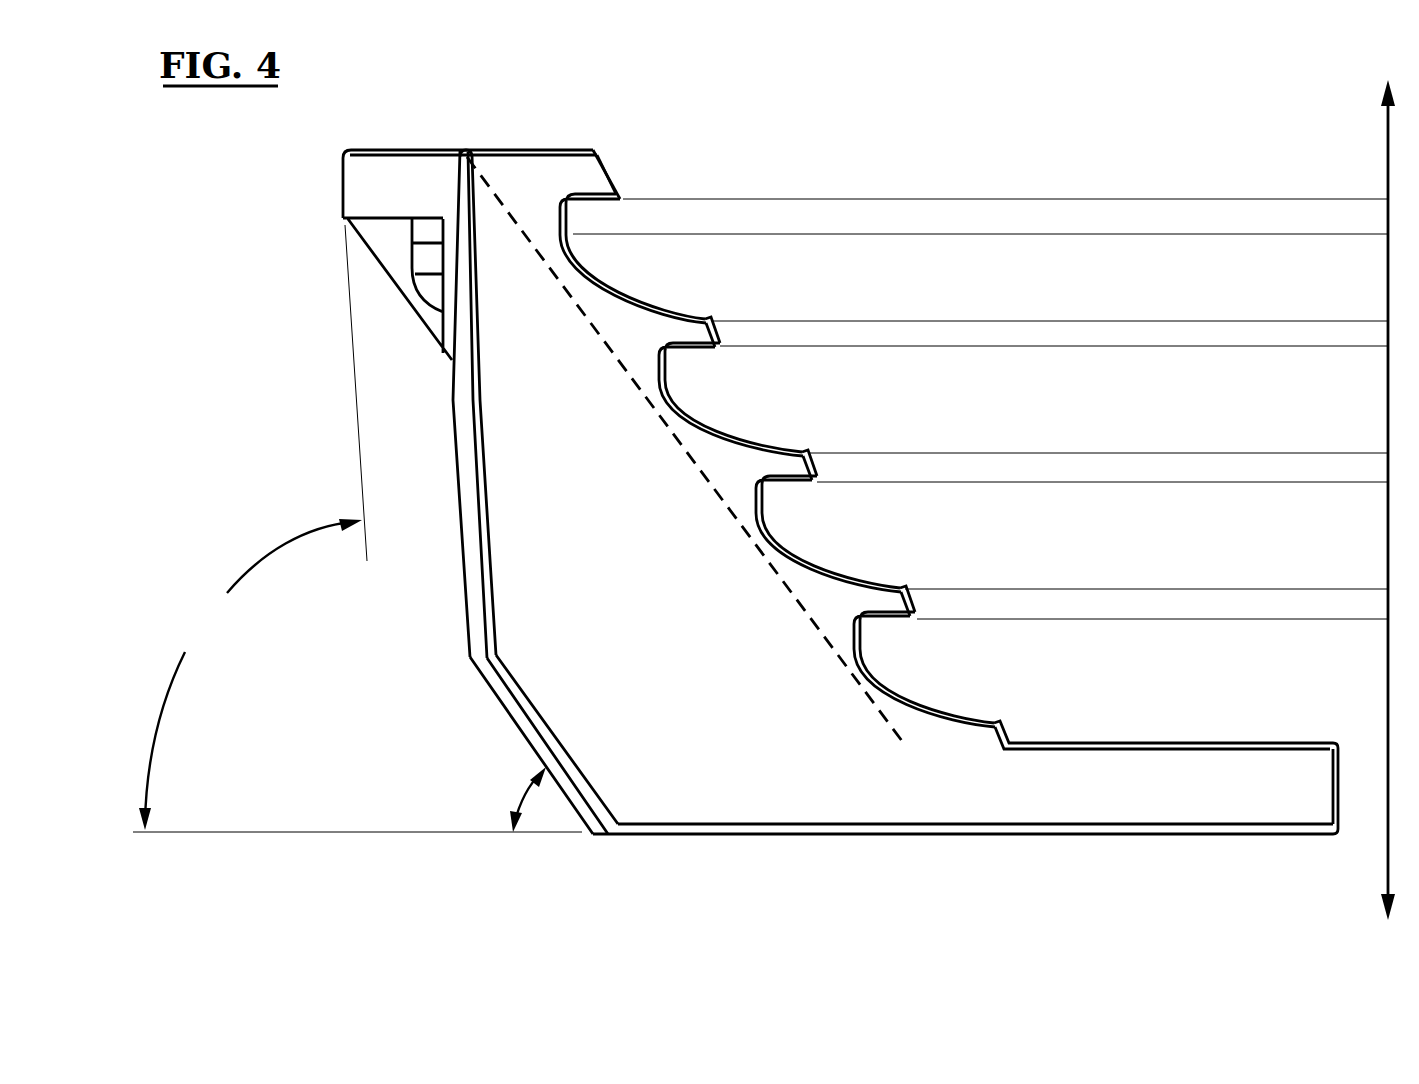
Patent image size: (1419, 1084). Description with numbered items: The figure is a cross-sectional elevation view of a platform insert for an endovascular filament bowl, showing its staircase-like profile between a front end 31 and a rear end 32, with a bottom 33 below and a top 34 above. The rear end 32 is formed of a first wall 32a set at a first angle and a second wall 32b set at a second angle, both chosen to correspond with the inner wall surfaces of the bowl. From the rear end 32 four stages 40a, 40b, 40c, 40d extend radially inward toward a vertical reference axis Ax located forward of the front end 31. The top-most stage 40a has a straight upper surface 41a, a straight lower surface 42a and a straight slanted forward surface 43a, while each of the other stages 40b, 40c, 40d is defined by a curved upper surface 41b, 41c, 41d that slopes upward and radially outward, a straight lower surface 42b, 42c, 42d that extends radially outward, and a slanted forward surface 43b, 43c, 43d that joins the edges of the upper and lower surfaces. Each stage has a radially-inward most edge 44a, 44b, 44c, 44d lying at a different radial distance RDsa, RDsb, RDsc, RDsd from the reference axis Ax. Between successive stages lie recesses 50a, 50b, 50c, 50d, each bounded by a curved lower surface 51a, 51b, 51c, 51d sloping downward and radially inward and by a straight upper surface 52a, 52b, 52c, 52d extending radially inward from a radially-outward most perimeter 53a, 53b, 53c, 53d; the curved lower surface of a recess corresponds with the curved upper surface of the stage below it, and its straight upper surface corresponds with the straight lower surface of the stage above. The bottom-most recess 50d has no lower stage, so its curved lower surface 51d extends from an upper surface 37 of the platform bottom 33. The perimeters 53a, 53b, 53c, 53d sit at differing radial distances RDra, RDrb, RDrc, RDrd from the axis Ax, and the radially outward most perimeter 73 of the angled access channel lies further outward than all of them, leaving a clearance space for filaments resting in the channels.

The front end 31 is at (1340, 797).
The rear end 32 is at (474, 492).
The first wall 32a is at (481, 677).
The second wall 32b is at (461, 470).
The bottom 33 is at (962, 834).
The top 34 is at (407, 150).
The upper surface of the platform bottom 37 is at (1178, 788).
The first stage 40a is at (627, 221).
The second stage 40b is at (741, 378).
The third stage 40c is at (827, 503).
The fourth stage 40d is at (917, 646).
The straight upper surface 41a is at (614, 158).
The first curved upper surface 41b is at (703, 317).
The first curved upper surface 41c is at (818, 452).
The first curved upper surface 41d is at (908, 590).
The straight lower surface 42a is at (598, 206).
The second straight lower surface 42b is at (692, 350).
The second straight lower surface 42c is at (790, 484).
The second straight lower surface 42d is at (883, 625).
The straight slanted forward surface 43a is at (622, 183).
The third straight slanted forward surface 43b is at (718, 330).
The third straight slanted forward surface 43c is at (823, 462).
The third straight slanted forward surface 43d is at (922, 597).
The radially-inward most edge 44a is at (625, 193).
The radially-inward most edge 44b is at (722, 346).
The radially-inward most edge 44c is at (825, 480).
The radially-inward most edge 44d is at (918, 620).
The first recess 50a is at (606, 257).
The second recess 50b is at (712, 396).
The third recess 50c is at (836, 531).
The fourth recess 50d is at (920, 695).
The first curved lower surface 51a is at (615, 305).
The first curved lower surface 51b is at (710, 447).
The first curved lower surface 51c is at (812, 568).
The first curved lower surface 51d is at (920, 722).
The second straight upper surface 52a is at (576, 199).
The second straight upper surface 52b is at (655, 360).
The second straight upper surface 52c is at (753, 478).
The second straight upper surface 52d is at (850, 622).
The radially-outward most perimeter 53a is at (548, 212).
The radially-outward most perimeter 53b is at (676, 405).
The radially-outward most perimeter 53c is at (765, 530).
The radially-outward most perimeter 53d is at (850, 650).
The radially outward most perimeter of the access channel 73 is at (552, 285).
The first radial distance RDsa is at (1205, 199).
The first radial distance RDra is at (1157, 235).
The second radial distance RDsb is at (1260, 321).
The second radial distance RDrb is at (1168, 347).
The third radial distance RDsc is at (1232, 453).
The third radial distance RDrc is at (1237, 483).
The fourth radial distance RDsd is at (1268, 589).
The fourth radial distance RDrd is at (1218, 620).
The vertical reference axis Ax is at (1392, 503).